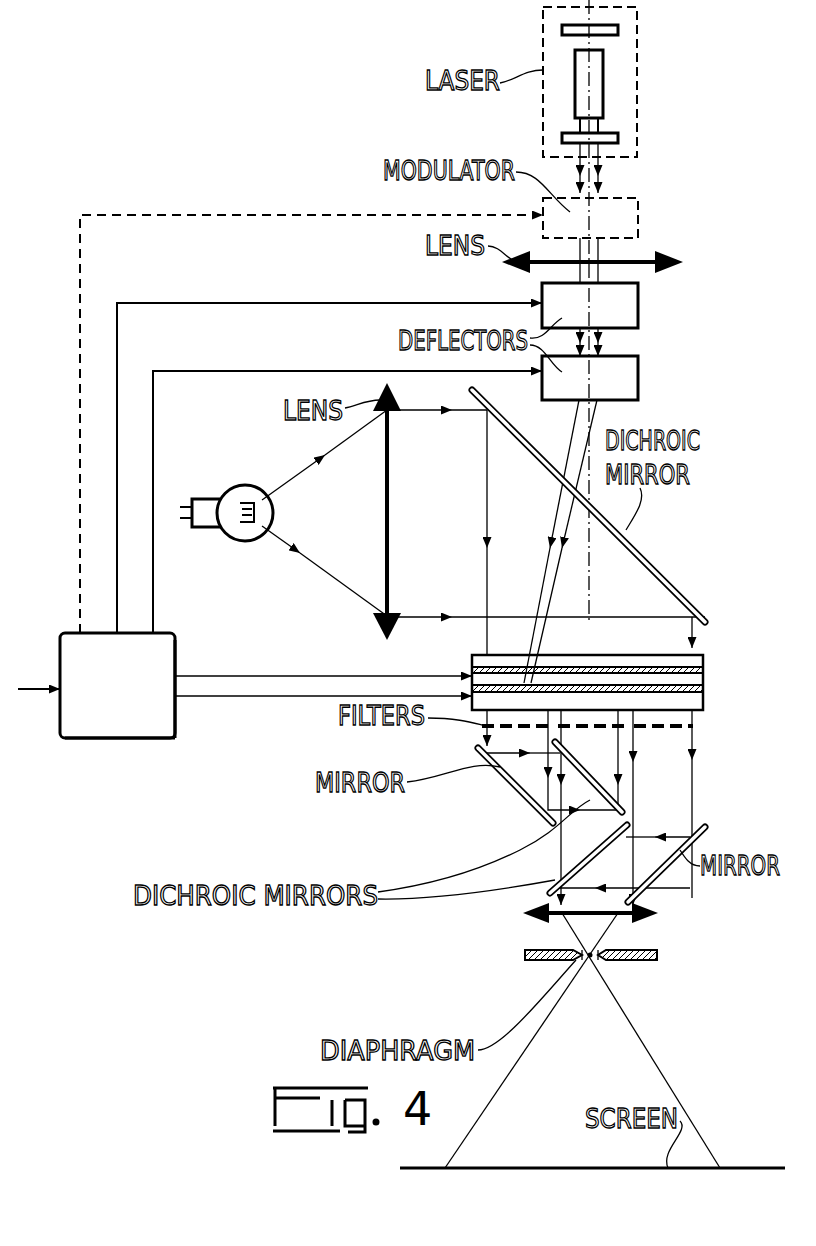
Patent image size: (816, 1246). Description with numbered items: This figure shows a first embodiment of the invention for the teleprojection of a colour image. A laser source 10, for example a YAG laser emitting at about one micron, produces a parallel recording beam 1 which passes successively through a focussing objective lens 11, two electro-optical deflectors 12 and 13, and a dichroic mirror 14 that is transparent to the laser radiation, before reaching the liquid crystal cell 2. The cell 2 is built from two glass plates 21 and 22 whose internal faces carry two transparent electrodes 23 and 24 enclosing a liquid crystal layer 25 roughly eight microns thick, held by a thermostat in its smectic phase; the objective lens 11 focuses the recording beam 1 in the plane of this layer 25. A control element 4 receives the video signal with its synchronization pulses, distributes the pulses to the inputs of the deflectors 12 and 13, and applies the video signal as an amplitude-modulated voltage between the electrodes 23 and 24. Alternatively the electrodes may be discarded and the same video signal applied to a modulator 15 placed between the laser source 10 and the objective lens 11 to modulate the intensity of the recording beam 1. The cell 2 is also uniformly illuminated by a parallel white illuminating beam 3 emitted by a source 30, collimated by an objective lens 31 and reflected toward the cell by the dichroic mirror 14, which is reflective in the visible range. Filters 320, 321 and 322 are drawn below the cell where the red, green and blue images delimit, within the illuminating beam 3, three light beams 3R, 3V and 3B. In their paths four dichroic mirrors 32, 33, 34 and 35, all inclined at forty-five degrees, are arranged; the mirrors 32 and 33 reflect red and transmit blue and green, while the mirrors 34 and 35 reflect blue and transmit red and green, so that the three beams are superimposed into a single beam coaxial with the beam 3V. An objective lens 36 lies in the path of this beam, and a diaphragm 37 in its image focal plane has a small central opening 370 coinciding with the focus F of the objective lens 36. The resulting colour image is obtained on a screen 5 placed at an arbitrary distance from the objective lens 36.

The laser source 10 is at (627, 72).
The recording beam 1 is at (602, 170).
The modulator 15 is at (635, 210).
The focussing objective lens 11 is at (658, 265).
The electro-optical deflector 12 is at (628, 303).
The electro-optical deflector 13 is at (628, 378).
The objective lens 31 is at (389, 485).
The source 30 is at (247, 500).
The illuminating beam 3 is at (497, 632).
The dichroic mirror 14 is at (660, 578).
The liquid crystal cell 2 is at (627, 681).
The glass plate 21 is at (703, 658).
The transparent electrode 23 is at (703, 670).
The liquid crystal layer 25 is at (703, 679).
The transparent electrode 24 is at (703, 689).
The glass plate 22 is at (610, 744).
The control element 4 is at (140, 720).
The red filter 320 is at (486, 731).
The green filter 321 is at (566, 734).
The blue filter 322 is at (633, 735).
The red light beam 3R is at (508, 780).
The green light beam 3V is at (580, 807).
The blue light beam 3B is at (706, 833).
The dichroic mirror 32 is at (530, 812).
The dichroic mirror 33 is at (578, 866).
The dichroic mirror 34 is at (553, 890).
The dichroic mirror 35 is at (668, 866).
The objective lens 36 is at (521, 918).
The diaphragm 37 is at (528, 962).
The opening 370 is at (589, 965).
The focus F is at (597, 960).
The screen 5 is at (553, 1168).